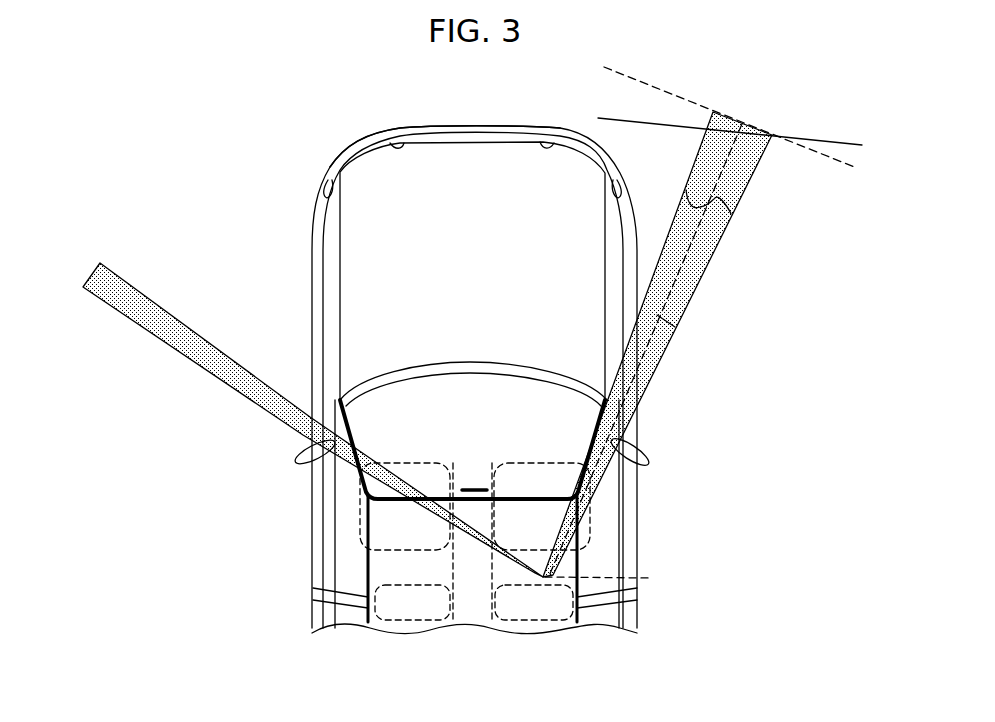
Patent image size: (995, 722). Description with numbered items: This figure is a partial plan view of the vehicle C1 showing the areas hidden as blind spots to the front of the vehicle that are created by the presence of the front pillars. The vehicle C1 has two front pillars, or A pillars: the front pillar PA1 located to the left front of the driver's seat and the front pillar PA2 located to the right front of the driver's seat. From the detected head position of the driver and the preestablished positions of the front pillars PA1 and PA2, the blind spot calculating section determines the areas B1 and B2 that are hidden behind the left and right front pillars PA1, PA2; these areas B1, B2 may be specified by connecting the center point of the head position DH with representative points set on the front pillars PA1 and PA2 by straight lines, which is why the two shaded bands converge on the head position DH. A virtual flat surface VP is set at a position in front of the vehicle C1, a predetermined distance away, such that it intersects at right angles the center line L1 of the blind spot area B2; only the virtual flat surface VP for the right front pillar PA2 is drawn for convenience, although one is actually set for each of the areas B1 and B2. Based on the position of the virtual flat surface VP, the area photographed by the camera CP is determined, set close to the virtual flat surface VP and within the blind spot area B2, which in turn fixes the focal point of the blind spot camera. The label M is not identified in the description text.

The vehicle C1 is at (348, 147).
The area hidden as a blind spot B1 is at (133, 286).
The area hidden as a blind spot B2 is at (702, 271).
The front pillar PA1 is at (350, 418).
The front pillar PA2 is at (597, 427).
The center member M is at (471, 486).
The center point of the head position DH is at (614, 576).
The center line L1 is at (673, 327).
The virtual flat surface VP is at (758, 128).
The area photographed by the camera CP is at (823, 138).